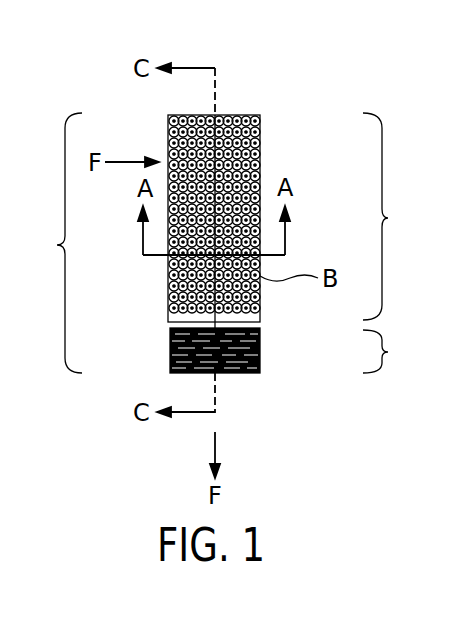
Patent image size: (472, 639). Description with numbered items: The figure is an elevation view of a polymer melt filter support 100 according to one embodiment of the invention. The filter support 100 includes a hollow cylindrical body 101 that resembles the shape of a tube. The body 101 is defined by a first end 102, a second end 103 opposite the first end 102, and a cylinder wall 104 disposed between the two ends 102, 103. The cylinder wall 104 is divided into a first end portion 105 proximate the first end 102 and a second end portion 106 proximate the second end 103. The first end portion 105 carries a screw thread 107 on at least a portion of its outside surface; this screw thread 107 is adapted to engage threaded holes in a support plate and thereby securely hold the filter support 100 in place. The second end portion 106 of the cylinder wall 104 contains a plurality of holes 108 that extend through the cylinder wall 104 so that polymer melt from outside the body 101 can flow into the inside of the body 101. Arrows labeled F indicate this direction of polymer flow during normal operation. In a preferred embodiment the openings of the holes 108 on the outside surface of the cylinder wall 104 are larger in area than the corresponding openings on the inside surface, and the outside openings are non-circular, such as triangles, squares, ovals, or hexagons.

The polymer melt filter support 100 is at (300, 90).
The hollow cylindrical body 101 is at (48, 243).
The first end 102 is at (245, 376).
The second end 103 is at (235, 114).
The cylinder wall 104 is at (168, 298).
The first end portion 105 is at (398, 351).
The second end portion 106 is at (398, 216).
The screw thread 107 is at (170, 350).
The holes 108 is at (260, 140).